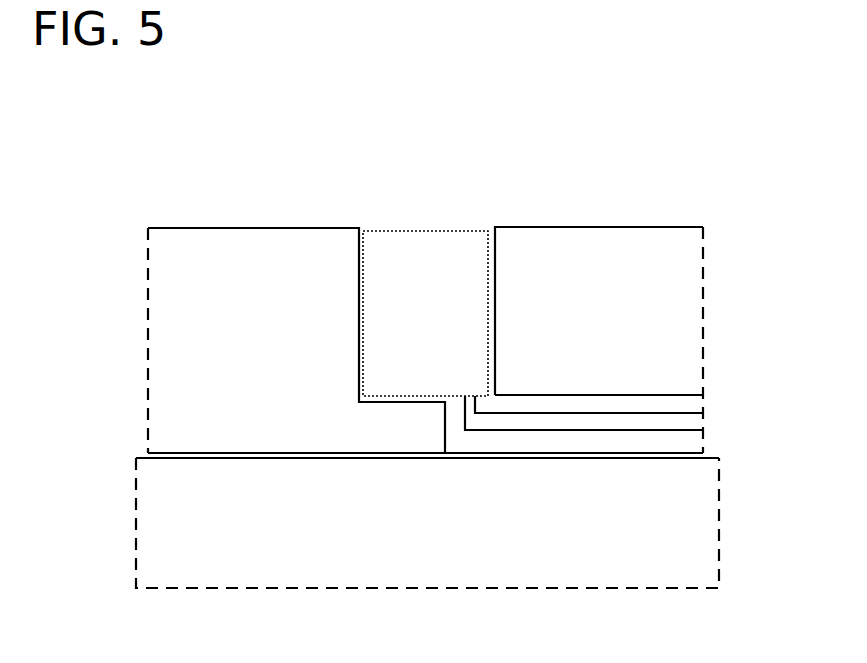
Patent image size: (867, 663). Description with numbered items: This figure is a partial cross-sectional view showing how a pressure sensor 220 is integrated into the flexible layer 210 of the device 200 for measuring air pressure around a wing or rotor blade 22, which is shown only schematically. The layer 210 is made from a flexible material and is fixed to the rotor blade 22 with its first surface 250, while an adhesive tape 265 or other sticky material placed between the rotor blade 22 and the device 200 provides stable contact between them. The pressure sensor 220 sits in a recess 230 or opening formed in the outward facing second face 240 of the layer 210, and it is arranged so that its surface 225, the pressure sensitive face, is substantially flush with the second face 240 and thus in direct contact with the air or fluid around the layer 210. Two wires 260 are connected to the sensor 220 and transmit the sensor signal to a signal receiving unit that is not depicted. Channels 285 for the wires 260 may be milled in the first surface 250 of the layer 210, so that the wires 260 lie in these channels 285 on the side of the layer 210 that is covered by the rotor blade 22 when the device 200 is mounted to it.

The device 200 is at (73, 336).
The rotor blade 22 is at (62, 537).
The layer 210 is at (282, 437).
The pressure sensor 220 is at (428, 245).
The surface of the sensor 225 is at (375, 228).
The recess 230 is at (432, 402).
The second face 240 is at (243, 226).
The first surface 250 is at (375, 455).
The wires 260 is at (575, 430).
The adhesive tape 265 is at (146, 455).
The channels 285 is at (685, 392).